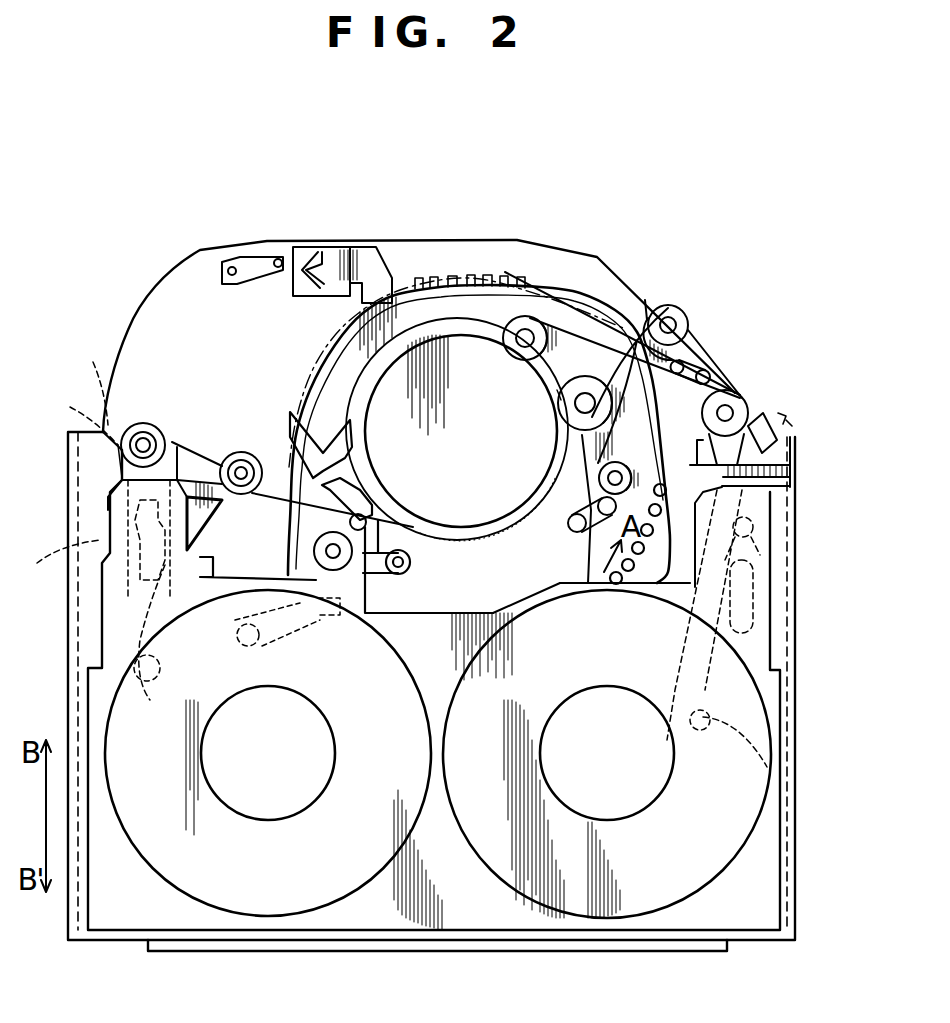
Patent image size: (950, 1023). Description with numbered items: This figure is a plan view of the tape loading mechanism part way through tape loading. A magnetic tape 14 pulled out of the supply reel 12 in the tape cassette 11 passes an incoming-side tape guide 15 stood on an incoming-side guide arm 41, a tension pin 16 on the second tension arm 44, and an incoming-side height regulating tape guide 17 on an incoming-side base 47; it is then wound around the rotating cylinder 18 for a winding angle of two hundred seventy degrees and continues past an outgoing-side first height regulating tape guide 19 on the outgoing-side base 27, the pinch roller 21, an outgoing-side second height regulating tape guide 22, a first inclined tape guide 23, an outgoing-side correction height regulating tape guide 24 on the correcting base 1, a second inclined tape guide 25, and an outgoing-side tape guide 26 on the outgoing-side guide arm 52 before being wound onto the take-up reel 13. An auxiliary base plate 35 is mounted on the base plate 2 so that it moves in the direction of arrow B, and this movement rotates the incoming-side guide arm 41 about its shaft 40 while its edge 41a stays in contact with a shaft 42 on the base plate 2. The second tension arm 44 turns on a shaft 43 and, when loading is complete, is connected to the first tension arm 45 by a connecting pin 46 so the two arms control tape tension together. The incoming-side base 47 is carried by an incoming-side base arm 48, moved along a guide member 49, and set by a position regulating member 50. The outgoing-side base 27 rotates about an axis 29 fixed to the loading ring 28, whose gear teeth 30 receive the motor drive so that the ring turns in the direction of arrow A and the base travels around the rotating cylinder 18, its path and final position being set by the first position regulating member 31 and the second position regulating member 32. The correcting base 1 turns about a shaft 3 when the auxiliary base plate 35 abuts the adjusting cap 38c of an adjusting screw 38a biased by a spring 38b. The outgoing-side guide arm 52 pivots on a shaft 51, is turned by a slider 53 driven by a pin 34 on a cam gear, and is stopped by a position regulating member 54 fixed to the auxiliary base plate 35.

The correcting base 1 is at (645, 300).
The base plate 2 is at (168, 268).
The shaft 3 is at (750, 413).
The tape cassette 11 is at (789, 825).
The supply reel 12 is at (273, 917).
The take-up reel 13 is at (562, 913).
The magnetic tape 14 is at (117, 473).
The incoming-side tape guide 15 is at (162, 430).
The tension pin 16 is at (232, 455).
The incoming-side height regulating tape guide 17 is at (393, 612).
The rotating cylinder 18 is at (382, 397).
The outgoing-side first height regulating tape guide 19 is at (497, 323).
The pinch roller 21 is at (590, 375).
The outgoing-side second height regulating tape guide 22 is at (547, 470).
The first inclined tape guide 23 is at (573, 527).
The outgoing-side correction height regulating tape guide 24 is at (673, 303).
The second inclined tape guide 25 is at (685, 355).
The outgoing-side tape guide 26 is at (757, 420).
The outgoing-side base 27 is at (730, 390).
The loading ring 28 is at (448, 287).
The axis (shaft) 29 is at (557, 393).
The gear teeth 30 is at (645, 598).
The first position regulating member 31 is at (292, 412).
The second position regulating member 32 is at (300, 262).
The pin 34 is at (700, 730).
The auxiliary base plate 35 is at (88, 650).
The adjusting screw 38a is at (782, 418).
The spring 38b is at (788, 424).
The adjusting cap 38c is at (782, 452).
The shaft 40 is at (112, 500).
The incoming-side guide arm 41 is at (136, 436).
The edge 41a is at (125, 582).
The shaft 42 is at (165, 565).
The shaft 43 is at (88, 392).
The second tension arm 44 is at (120, 445).
The first tension arm 45 is at (160, 682).
The connecting pin 46 is at (197, 543).
The incoming-side base 47 is at (300, 580).
The incoming-side base arm 48 is at (323, 613).
The guide member 49 is at (340, 572).
The position regulating member 50 is at (380, 466).
The shaft 51 is at (700, 600).
The outgoing-side guide arm 52 is at (767, 527).
The slider 53 is at (777, 683).
The position regulating member 54 is at (642, 552).